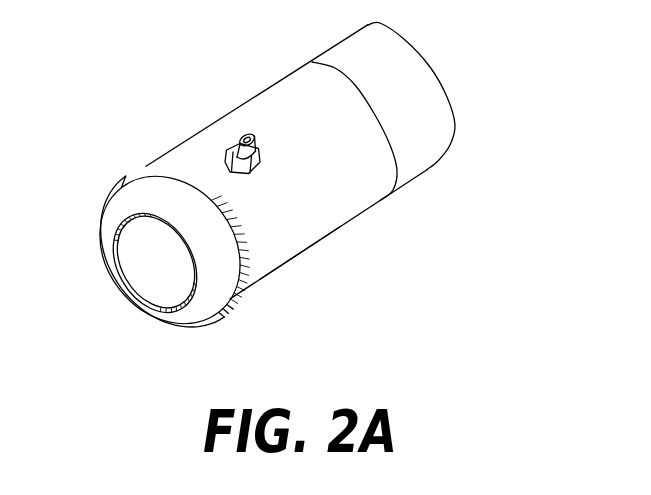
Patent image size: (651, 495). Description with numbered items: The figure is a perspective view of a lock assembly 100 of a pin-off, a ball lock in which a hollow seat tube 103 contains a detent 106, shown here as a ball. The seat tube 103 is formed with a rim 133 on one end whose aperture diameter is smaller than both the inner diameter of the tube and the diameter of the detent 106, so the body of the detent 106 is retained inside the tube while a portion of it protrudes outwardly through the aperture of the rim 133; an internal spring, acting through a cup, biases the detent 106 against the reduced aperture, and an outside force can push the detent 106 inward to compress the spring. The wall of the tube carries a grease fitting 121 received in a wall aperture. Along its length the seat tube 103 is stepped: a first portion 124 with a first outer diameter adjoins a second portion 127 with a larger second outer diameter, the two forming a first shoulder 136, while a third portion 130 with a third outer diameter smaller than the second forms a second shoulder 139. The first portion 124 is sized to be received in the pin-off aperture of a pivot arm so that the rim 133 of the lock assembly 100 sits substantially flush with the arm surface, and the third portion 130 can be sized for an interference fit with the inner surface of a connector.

The lock assembly 100 is at (185, 80).
The seat tube 103 is at (340, 240).
The detent 106 is at (133, 265).
The grease fitting 121 is at (253, 134).
The first portion 124 is at (205, 300).
The second portion 127 is at (297, 263).
The third portion 130 is at (424, 168).
The rim 133 is at (166, 316).
The first shoulder 136 is at (148, 172).
The second shoulder 139 is at (313, 46).